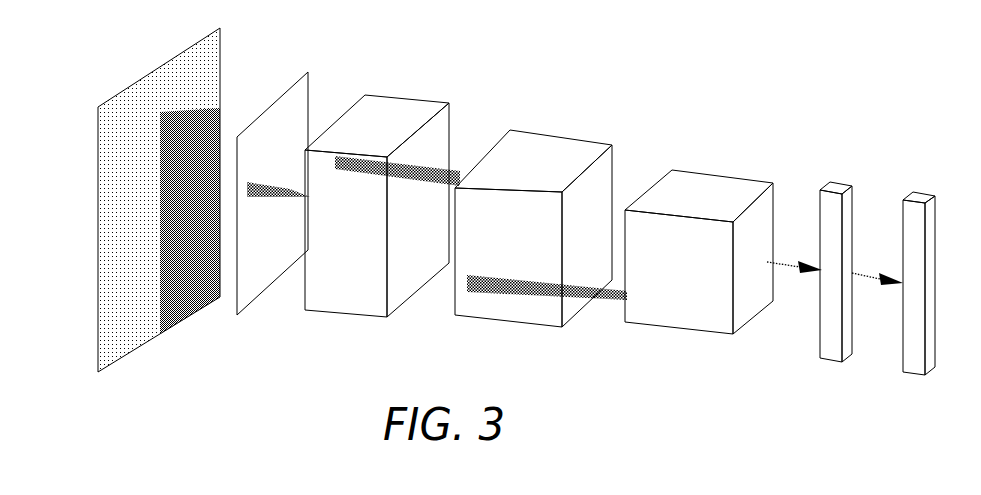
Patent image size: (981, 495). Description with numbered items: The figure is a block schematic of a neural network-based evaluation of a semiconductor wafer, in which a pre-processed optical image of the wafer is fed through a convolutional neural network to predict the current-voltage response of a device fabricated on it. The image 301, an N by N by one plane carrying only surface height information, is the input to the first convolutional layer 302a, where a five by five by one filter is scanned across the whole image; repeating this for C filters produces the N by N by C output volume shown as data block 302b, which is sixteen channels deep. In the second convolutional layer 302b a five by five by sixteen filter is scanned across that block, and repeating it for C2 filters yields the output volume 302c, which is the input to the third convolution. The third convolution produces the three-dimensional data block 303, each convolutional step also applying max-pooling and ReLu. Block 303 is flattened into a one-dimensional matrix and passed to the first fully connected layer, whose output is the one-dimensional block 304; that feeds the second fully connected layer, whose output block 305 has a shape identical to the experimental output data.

The image 301 is at (78, 157).
The first convolutional layer 302a is at (284, 80).
The second convolutional layer data block 302b is at (393, 93).
The third convolutional layer data block 302c is at (552, 133).
The third convolution output data block 303 is at (708, 176).
The first fully connected layer output block 304 is at (840, 176).
The second fully connected layer output block 305 is at (922, 186).